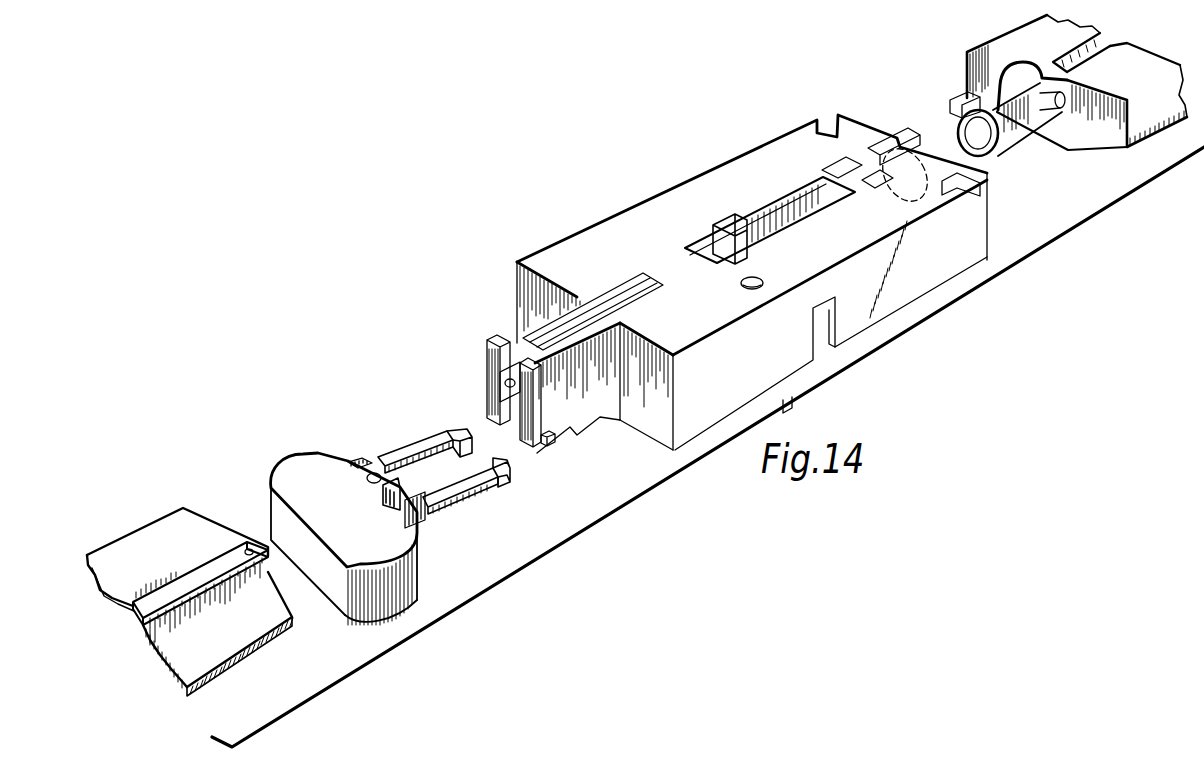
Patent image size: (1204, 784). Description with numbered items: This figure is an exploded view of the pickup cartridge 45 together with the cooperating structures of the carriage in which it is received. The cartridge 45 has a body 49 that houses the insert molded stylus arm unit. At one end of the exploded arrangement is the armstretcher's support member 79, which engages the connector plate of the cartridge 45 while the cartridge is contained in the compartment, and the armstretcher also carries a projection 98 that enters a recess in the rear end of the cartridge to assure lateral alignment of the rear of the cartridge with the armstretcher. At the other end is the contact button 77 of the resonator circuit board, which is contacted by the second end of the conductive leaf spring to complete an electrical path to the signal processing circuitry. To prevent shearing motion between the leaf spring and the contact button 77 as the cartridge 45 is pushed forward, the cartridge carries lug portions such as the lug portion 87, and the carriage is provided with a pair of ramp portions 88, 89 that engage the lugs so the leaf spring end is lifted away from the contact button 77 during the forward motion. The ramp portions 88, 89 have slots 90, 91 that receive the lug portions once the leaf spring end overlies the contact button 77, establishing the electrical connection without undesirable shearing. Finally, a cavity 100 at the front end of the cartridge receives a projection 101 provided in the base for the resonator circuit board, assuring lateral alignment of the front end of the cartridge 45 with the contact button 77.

The cartridge 45 is at (712, 158).
The body 49 is at (584, 223).
The contact button 77 is at (247, 550).
The support member 79 is at (1012, 142).
The lug portion 87 is at (556, 440).
The ramp portion 88 is at (418, 455).
The ramp portion 89 is at (463, 503).
The slot 90 is at (378, 470).
The slot 91 is at (427, 513).
The projection 98 is at (1023, 90).
The cavity 100 is at (513, 430).
The projection 101 is at (402, 496).